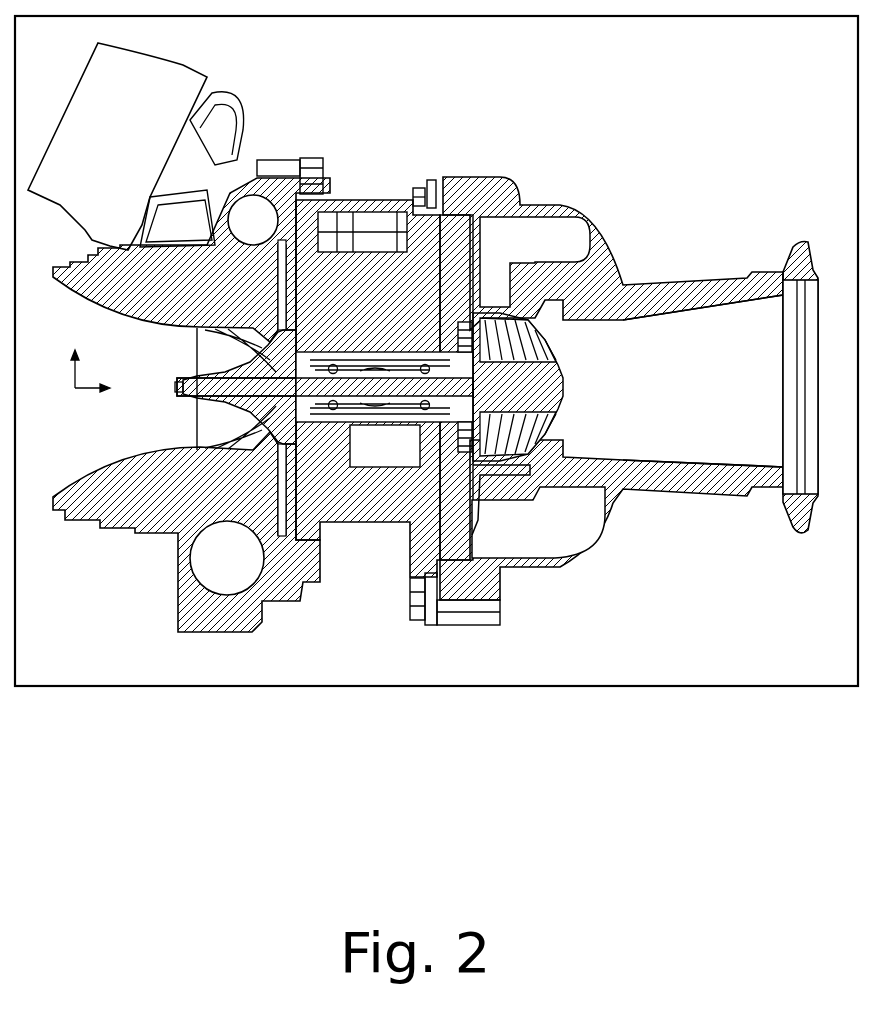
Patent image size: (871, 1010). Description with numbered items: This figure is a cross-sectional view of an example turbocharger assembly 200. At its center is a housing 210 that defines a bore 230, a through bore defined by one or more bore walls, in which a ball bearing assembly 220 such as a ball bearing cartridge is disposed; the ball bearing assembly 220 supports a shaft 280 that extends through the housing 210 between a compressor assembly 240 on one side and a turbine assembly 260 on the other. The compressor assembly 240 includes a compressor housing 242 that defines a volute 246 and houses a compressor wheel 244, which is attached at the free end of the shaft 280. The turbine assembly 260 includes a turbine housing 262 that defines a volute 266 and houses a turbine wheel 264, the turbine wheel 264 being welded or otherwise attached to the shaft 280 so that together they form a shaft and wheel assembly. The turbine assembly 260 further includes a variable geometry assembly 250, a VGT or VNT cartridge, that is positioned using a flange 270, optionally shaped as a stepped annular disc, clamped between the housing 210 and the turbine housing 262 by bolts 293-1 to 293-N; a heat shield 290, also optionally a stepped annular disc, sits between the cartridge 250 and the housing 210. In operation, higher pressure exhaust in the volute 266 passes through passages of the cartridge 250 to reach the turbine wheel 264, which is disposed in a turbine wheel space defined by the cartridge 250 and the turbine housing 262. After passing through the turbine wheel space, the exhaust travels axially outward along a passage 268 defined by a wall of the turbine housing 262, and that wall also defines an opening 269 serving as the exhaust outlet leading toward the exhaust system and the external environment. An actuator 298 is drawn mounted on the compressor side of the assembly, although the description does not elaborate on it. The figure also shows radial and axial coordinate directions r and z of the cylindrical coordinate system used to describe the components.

The turbocharger assembly 200 is at (793, 59).
The housing 210 is at (390, 294).
The ball bearing assembly 220 is at (360, 430).
The bore 230 is at (323, 360).
The compressor assembly 240 is at (130, 572).
The compressor housing 242 is at (218, 300).
The compressor wheel 244 is at (270, 422).
The volute 246 is at (251, 574).
The variable geometry assembly 250 is at (530, 526).
The turbine assembly 260 is at (672, 170).
The turbine housing 262 is at (625, 312).
The turbine wheel 264 is at (543, 396).
The volute 266 is at (562, 249).
The passage 268 is at (758, 394).
The opening 269 is at (816, 345).
The flange 270 is at (485, 533).
The shaft 280 is at (177, 392).
The heat shield 290 is at (462, 340).
The bolt 293-1 is at (414, 188).
The bolt 293-N is at (410, 597).
The actuator 298 is at (266, 93).